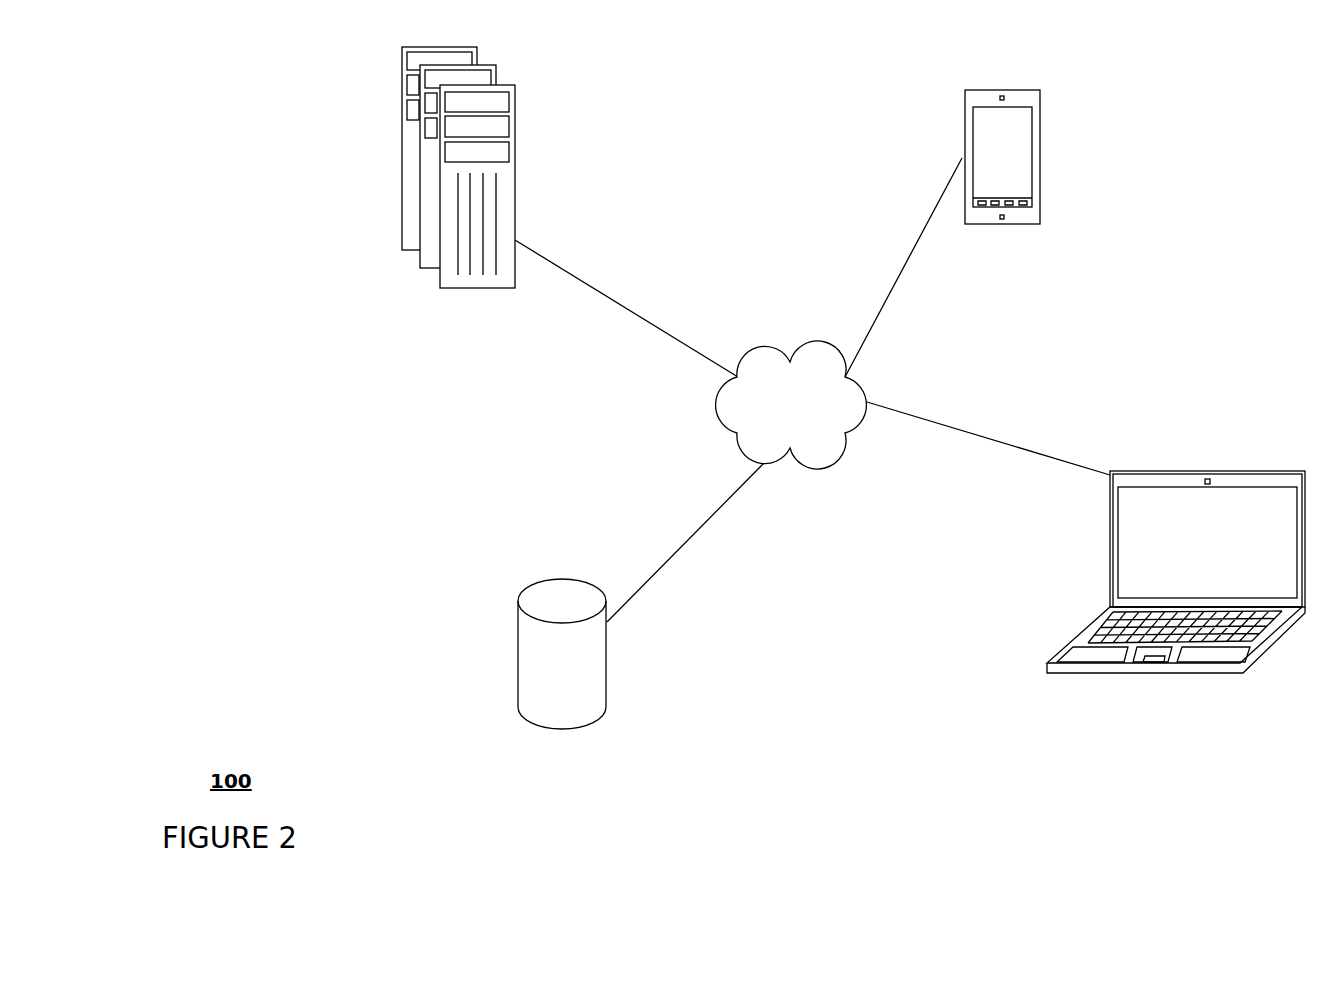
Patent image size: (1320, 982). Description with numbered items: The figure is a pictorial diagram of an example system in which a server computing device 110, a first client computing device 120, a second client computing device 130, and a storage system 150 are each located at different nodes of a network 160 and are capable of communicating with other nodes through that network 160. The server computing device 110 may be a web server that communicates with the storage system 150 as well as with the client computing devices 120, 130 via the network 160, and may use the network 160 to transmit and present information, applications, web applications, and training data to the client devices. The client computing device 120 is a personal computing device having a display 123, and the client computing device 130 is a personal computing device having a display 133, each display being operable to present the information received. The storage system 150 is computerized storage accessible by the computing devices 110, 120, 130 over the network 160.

The server computing device 110 is at (515, 130).
The client computing device 120 is at (965, 124).
The display 123 is at (973, 152).
The client computing device 130 is at (1110, 548).
The display 133 is at (1116, 588).
The storage system 150 is at (608, 676).
The network 160 is at (791, 405).